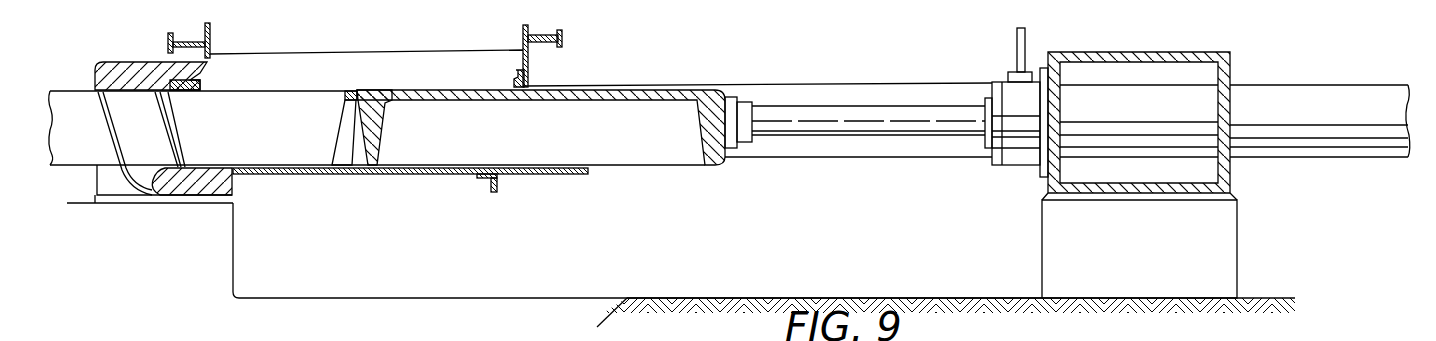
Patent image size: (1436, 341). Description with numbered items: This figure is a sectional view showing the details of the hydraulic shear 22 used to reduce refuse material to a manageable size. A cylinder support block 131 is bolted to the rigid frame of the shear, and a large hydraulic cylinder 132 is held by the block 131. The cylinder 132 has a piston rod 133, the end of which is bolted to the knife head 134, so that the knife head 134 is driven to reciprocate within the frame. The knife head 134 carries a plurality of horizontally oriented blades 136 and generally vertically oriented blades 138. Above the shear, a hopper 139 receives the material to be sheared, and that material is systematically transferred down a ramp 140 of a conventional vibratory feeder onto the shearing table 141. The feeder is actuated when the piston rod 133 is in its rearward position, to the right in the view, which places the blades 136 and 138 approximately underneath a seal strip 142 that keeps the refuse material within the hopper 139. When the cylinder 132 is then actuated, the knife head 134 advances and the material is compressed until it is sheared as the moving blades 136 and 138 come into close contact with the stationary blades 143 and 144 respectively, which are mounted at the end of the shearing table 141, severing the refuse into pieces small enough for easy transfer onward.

The hydraulic shear 22 is at (545, 178).
The cylinder support block 131 is at (1207, 52).
The hydraulic cylinder 132 is at (1288, 93).
The piston rod 133 is at (848, 108).
The knife head 134 is at (710, 100).
The horizontally oriented blades 136 is at (367, 92).
The vertically oriented blades 138 is at (342, 138).
The hopper 139 is at (523, 31).
The ramp 140 is at (895, 319).
The shearing table 141 is at (313, 174).
The seal strip 142 is at (513, 82).
The stationary blade 143 is at (200, 77).
The stationary blade 144 is at (157, 117).